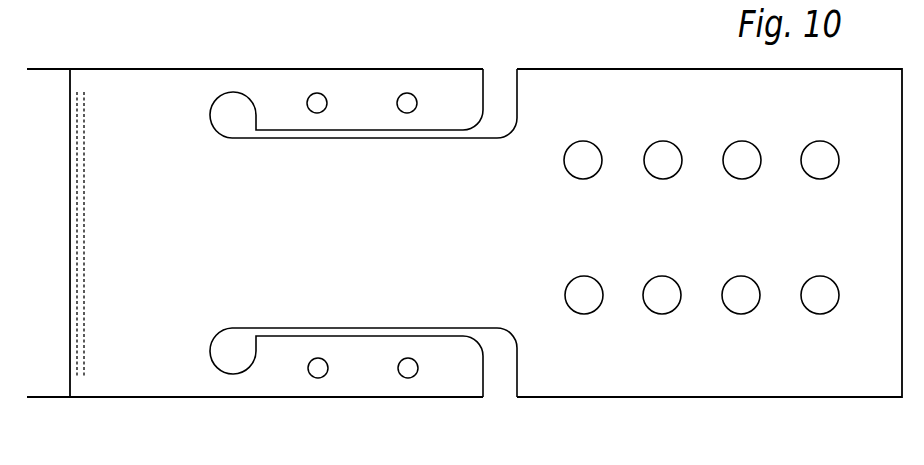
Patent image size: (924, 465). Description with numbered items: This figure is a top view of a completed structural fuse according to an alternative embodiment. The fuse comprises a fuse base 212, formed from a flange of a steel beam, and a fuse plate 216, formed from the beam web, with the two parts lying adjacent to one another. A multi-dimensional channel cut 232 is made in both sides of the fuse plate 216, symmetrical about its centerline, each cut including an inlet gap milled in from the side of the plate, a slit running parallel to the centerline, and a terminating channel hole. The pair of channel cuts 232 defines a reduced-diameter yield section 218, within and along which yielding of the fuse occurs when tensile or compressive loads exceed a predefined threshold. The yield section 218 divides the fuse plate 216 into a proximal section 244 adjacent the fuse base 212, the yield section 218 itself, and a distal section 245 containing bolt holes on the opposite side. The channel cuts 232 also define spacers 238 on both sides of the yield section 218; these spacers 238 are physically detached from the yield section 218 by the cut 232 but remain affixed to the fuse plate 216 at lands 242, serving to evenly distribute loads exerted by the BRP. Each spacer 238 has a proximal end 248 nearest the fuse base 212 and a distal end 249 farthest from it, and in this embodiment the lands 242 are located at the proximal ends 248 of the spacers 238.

The fuse base 212 is at (50, 69).
The fuse plate 216 is at (162, 69).
The yield section 218 is at (385, 231).
The multi-dimensional channel cut 232 is at (297, 138).
The spacer 238 is at (376, 101).
The land 242 is at (240, 82).
The proximal section 244 is at (144, 231).
The distal section 245 is at (792, 242).
The proximal end 248 is at (270, 88).
The distal end 249 is at (463, 87).